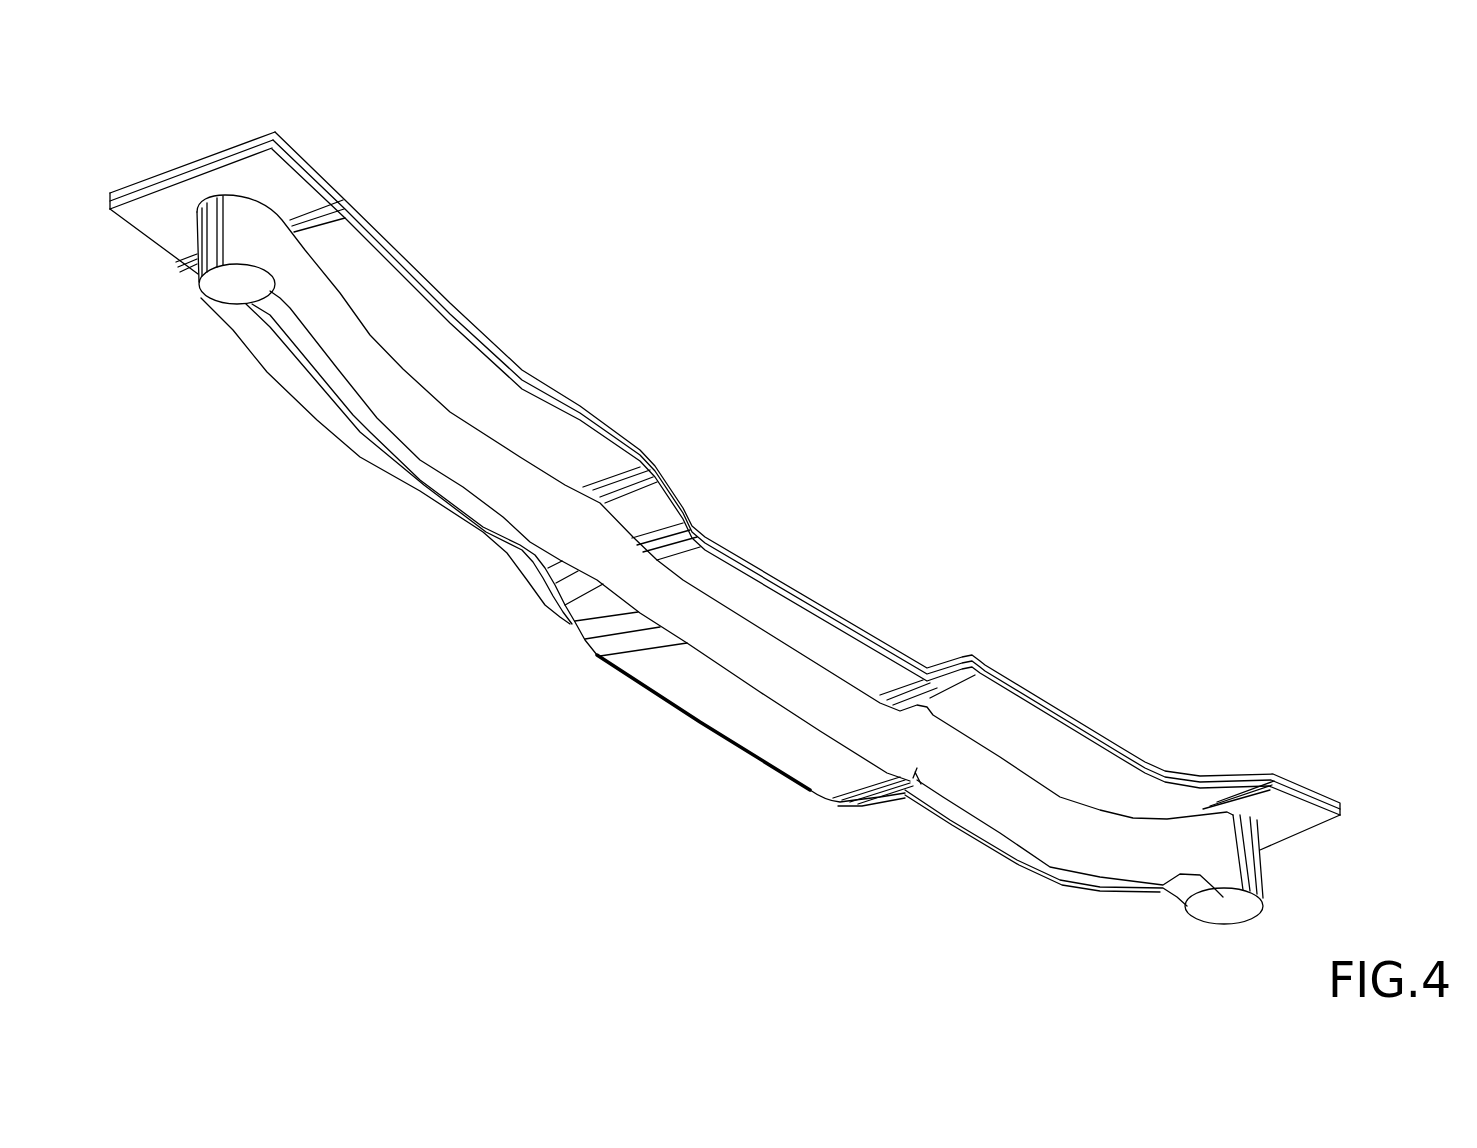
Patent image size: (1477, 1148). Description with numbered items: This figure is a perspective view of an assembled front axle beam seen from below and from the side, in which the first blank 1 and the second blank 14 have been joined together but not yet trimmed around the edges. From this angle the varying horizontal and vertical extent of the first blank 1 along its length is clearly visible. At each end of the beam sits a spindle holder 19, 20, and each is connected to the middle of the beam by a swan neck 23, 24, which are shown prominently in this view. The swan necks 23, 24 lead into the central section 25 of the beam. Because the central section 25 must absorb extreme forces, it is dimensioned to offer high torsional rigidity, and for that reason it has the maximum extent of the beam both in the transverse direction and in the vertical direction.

The first blank 1 is at (566, 656).
The second blank 14 is at (768, 538).
The spindle holder 19 is at (228, 284).
The spindle holder 20 is at (1217, 905).
The swan neck 23 is at (373, 424).
The swan neck 24 is at (1032, 840).
The central section 25 is at (713, 695).